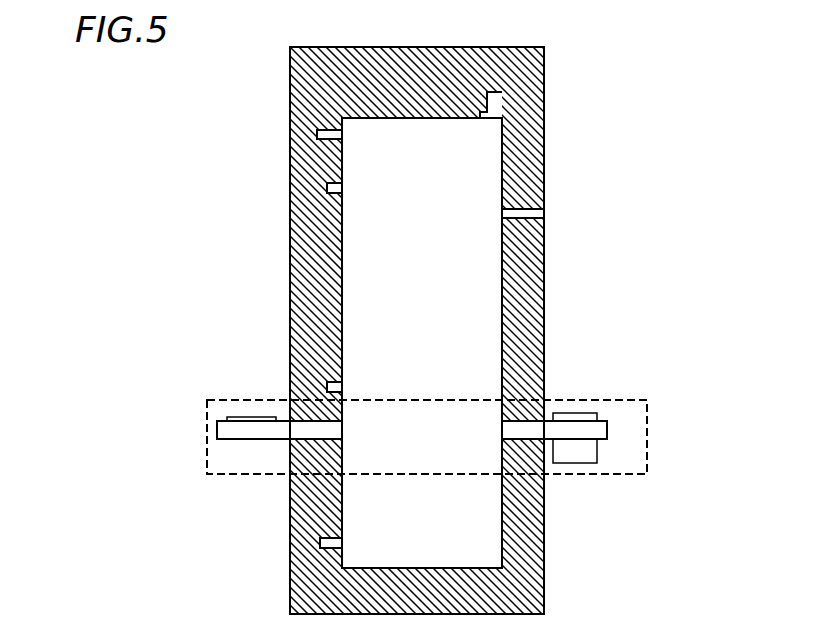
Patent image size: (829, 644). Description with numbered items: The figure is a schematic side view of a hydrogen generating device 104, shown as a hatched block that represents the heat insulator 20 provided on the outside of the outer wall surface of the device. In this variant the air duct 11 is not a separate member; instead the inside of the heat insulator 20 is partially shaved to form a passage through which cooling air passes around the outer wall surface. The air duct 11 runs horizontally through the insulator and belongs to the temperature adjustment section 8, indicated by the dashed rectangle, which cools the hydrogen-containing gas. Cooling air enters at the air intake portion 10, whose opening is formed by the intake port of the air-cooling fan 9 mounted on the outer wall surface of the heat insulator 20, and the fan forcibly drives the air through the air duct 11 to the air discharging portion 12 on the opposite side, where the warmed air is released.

The hydrogen generating device 104 is at (150, 93).
The heat insulator 20 is at (525, 257).
The air duct 11 is at (307, 429).
The air discharging portion 12 is at (244, 416).
The air intake portion 10 is at (573, 414).
The air-cooling fan 9 is at (575, 455).
The temperature adjustment section 8 is at (647, 427).